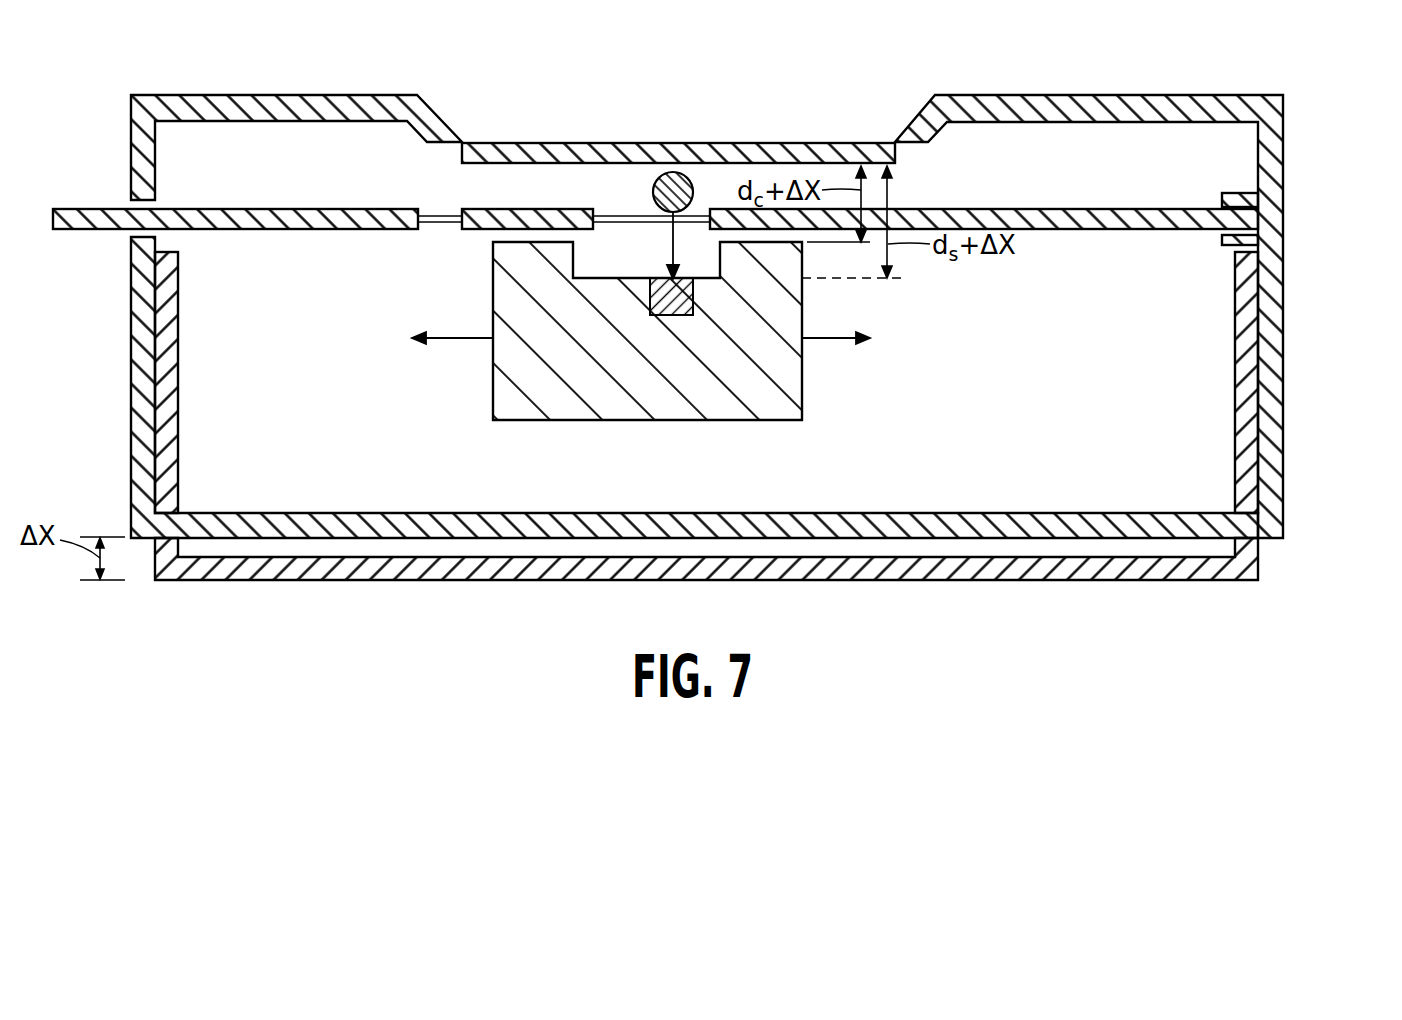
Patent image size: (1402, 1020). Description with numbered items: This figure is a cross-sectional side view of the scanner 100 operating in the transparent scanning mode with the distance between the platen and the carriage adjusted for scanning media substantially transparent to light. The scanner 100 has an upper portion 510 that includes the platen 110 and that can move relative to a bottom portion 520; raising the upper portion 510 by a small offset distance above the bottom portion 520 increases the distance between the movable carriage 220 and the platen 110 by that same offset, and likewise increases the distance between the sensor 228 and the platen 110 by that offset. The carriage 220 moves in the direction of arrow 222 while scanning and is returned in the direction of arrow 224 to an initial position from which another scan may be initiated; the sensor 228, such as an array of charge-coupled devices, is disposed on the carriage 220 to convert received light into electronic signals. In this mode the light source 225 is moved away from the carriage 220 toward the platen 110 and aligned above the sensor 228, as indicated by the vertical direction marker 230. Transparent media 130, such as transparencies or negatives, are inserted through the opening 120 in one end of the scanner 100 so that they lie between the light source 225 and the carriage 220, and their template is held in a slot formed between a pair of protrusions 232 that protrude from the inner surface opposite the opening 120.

The scanner 100 is at (190, 95).
The platen 110 is at (510, 143).
The opening 120 is at (130, 203).
The transparent media 130 is at (437, 223).
The movable carriage 220 is at (596, 422).
The arrow 222 is at (466, 341).
The arrow 224 is at (840, 333).
The light source 225 is at (693, 177).
The sensor 228 is at (676, 315).
The downward displacement direction 230 is at (671, 243).
The protrusions 232 is at (1256, 238).
The upper portion 510 is at (1285, 138).
The bottom portion 520 is at (1153, 582).